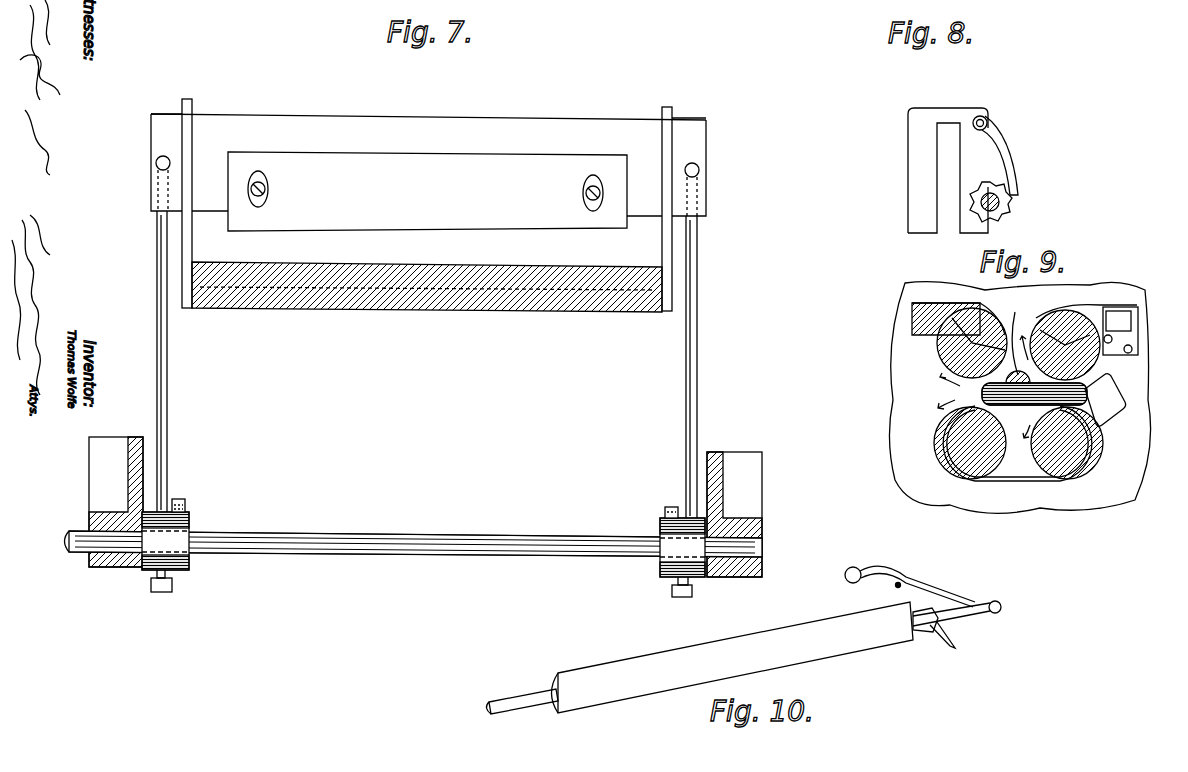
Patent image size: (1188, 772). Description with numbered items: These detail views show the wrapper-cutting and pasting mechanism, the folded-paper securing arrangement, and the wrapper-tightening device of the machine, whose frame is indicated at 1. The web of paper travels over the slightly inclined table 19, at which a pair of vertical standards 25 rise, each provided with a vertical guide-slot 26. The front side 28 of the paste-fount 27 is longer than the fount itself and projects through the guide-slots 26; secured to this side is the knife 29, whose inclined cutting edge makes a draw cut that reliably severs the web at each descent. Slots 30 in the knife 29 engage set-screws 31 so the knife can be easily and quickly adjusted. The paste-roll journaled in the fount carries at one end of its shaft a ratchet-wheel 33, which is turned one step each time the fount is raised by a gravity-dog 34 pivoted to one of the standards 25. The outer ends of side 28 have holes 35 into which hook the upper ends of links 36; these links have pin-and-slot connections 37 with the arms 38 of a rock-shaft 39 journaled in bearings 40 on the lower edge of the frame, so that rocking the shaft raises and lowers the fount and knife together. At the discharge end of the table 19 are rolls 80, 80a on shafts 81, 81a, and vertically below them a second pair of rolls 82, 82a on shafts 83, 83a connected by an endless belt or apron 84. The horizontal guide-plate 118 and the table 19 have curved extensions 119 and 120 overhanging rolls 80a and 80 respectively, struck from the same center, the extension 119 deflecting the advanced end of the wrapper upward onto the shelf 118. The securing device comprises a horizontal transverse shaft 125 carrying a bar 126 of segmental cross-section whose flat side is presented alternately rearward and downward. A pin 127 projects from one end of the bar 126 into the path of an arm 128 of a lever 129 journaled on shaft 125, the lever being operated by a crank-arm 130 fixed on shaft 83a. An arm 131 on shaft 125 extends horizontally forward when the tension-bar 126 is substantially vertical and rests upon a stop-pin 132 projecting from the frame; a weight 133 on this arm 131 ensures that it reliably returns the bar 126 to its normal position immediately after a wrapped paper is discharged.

In FIG. 7, the frame 1 is at (425, 507).
In FIG. 9, the frame 1 is at (1148, 387).
In FIG. 7, the inclined plane or table 19 is at (427, 298).
In FIG. 9, the inclined plane or table 19 is at (912, 318).
In FIG. 7, the vertical standards 25 is at (188, 100).
In FIG. 8, the vertical standards 25 is at (948, 159).
In FIG. 8, the vertical guide-slots 26 is at (949, 155).
In FIG. 7, the paste-fount 27 is at (428, 109).
In FIG. 7, the front side of paste-fount 28 is at (428, 165).
In FIG. 7, the knife 29 is at (427, 191).
In FIG. 7, the slots 30 is at (266, 181).
In FIG. 7, the set-screws 31 is at (266, 196).
In FIG. 8, the ratchet-wheel 33 is at (1008, 210).
In FIG. 8, the gravity-dog 34 is at (1012, 140).
In FIG. 7, the holes 35 is at (155, 163).
In FIG. 7, the links 36 is at (155, 352).
In FIG. 7, the pin-and-slot connections 37 is at (188, 510).
In FIG. 7, the arms of rock-shaft 38 is at (672, 507).
In FIG. 7, the rock-shaft 39 is at (414, 537).
In FIG. 7, the bearings 40 is at (120, 567).
In FIG. 9, the roll 80 is at (972, 343).
In FIG. 9, the roll 80a is at (1065, 345).
In FIG. 9, the shaft 81 is at (945, 350).
In FIG. 9, the shaft 81a is at (1065, 352).
In FIG. 9, the roll 82 is at (934, 443).
In FIG. 9, the roll 82a is at (1102, 445).
In FIG. 9, the shaft 83 is at (970, 443).
In FIG. 9, the shaft 83a is at (1067, 443).
In FIG. 9, the endless belt or apron 84 is at (1008, 482).
In FIG. 9, the horizontal guide-plate 118 is at (1120, 331).
In FIG. 9, the curved extension 119 is at (1045, 318).
In FIG. 9, the curved extension 120 is at (958, 297).
In FIG. 10, the horizontal transverse shaft 125 is at (520, 700).
In FIG. 9, the bar 126 is at (1034, 350).
In FIG. 10, the bar 126 is at (733, 657).
In FIG. 10, the pin 127 is at (940, 610).
In FIG. 10, the arm of lever 128 is at (920, 607).
In FIG. 10, the lever 129 is at (943, 648).
In FIG. 9, the crank-arm 130 is at (1105, 400).
In FIG. 10, the arm 131 is at (974, 604).
In FIG. 10, the stop-pin 132 is at (895, 587).
In FIG. 10, the weight 133 is at (851, 567).